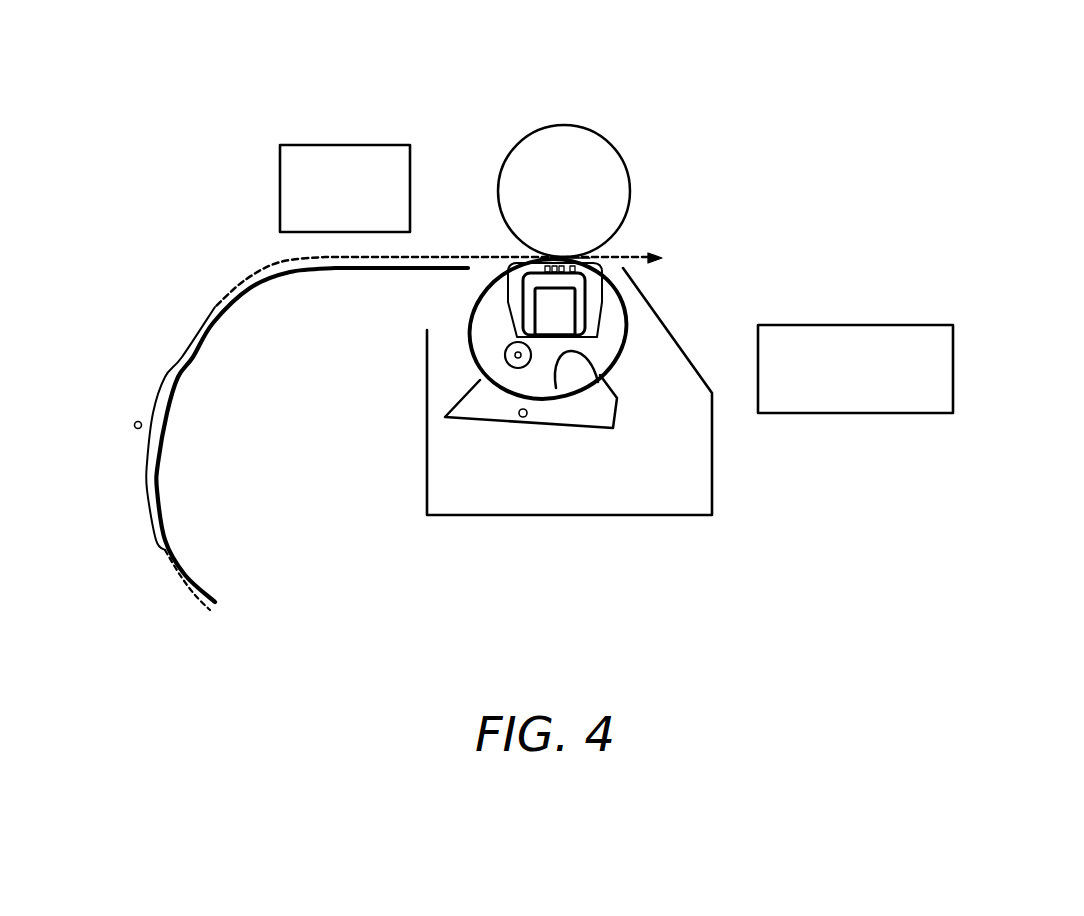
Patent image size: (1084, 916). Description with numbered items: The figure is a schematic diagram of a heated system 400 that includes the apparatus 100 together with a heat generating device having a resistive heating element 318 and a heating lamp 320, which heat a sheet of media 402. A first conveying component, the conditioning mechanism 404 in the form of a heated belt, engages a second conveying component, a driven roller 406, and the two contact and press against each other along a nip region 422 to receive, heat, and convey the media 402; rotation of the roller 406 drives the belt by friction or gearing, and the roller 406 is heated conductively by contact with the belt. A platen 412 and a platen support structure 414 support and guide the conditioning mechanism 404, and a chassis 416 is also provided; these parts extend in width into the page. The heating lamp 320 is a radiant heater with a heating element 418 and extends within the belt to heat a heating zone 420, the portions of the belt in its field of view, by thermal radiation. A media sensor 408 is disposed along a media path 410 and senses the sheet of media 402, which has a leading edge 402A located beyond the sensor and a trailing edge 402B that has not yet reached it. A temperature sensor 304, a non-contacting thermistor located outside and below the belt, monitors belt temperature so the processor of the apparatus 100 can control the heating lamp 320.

The heated system 400 is at (446, 57).
The resistive heating element 318 is at (366, 200).
The apparatus 100 is at (834, 397).
The roller 406 is at (503, 164).
The media path 410 is at (268, 270).
The sheet of media 402 is at (180, 357).
The leading edge 402A is at (213, 310).
The trailing edge 402B is at (163, 550).
The media sensor 408 is at (135, 425).
The conditioning mechanism 404 is at (470, 313).
The platen 412 is at (598, 266).
The platen support structure 414 is at (576, 316).
The nip region 422 is at (572, 250).
The heating lamp 320 is at (505, 349).
The heating element 418 is at (516, 356).
The chassis 416 is at (453, 417).
The heating zone 420 is at (617, 404).
The temperature sensor 304 is at (521, 418).